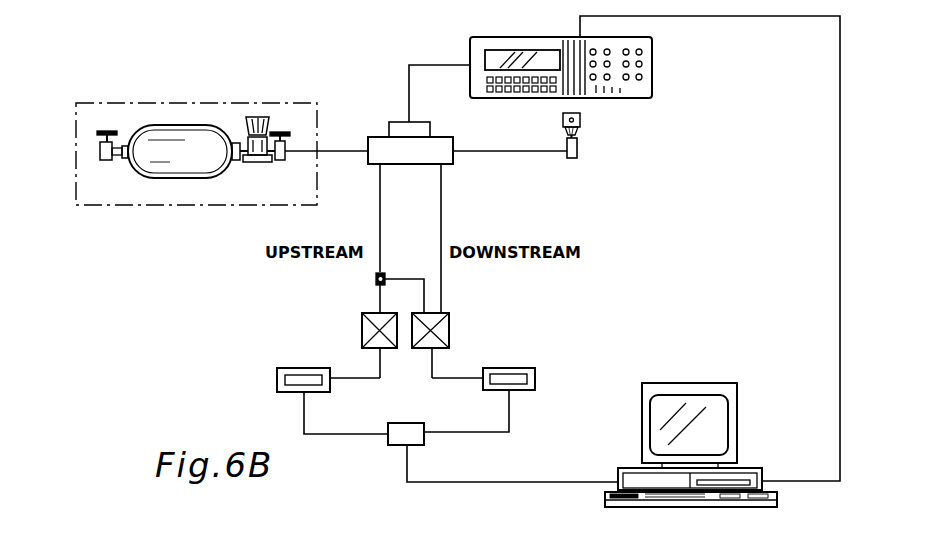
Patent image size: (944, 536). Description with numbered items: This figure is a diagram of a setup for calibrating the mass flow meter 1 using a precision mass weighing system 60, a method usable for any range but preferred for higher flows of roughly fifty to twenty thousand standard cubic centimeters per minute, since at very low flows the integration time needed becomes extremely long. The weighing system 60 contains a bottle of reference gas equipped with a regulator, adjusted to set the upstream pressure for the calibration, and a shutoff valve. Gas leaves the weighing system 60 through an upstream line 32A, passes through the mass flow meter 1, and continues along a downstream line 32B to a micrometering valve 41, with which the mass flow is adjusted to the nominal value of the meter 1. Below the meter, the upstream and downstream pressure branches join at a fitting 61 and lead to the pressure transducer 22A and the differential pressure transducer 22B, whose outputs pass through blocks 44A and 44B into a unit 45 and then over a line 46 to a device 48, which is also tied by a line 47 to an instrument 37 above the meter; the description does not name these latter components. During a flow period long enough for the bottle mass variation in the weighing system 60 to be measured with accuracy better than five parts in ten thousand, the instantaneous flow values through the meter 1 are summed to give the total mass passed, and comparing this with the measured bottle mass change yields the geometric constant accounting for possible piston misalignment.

The mass flow meter 1 is at (447, 130).
The upstream conduit 32A is at (325, 153).
The downstream conduit 32B is at (505, 155).
The electronic control/readout unit 37 is at (598, 100).
The micrometering valve 41 is at (578, 155).
The precision mass weighing system 60 is at (274, 205).
The junction/tee fitting 61 is at (374, 280).
The pressure transducer 22A is at (362, 330).
The differential pressure transducer 22B is at (449, 330).
The upstream signal conditioner 44A is at (277, 376).
The downstream signal conditioner 44B is at (535, 378).
The interface unit 45 is at (424, 440).
The data line 46 is at (543, 481).
The control line 47 is at (840, 360).
The computer 48 is at (690, 383).